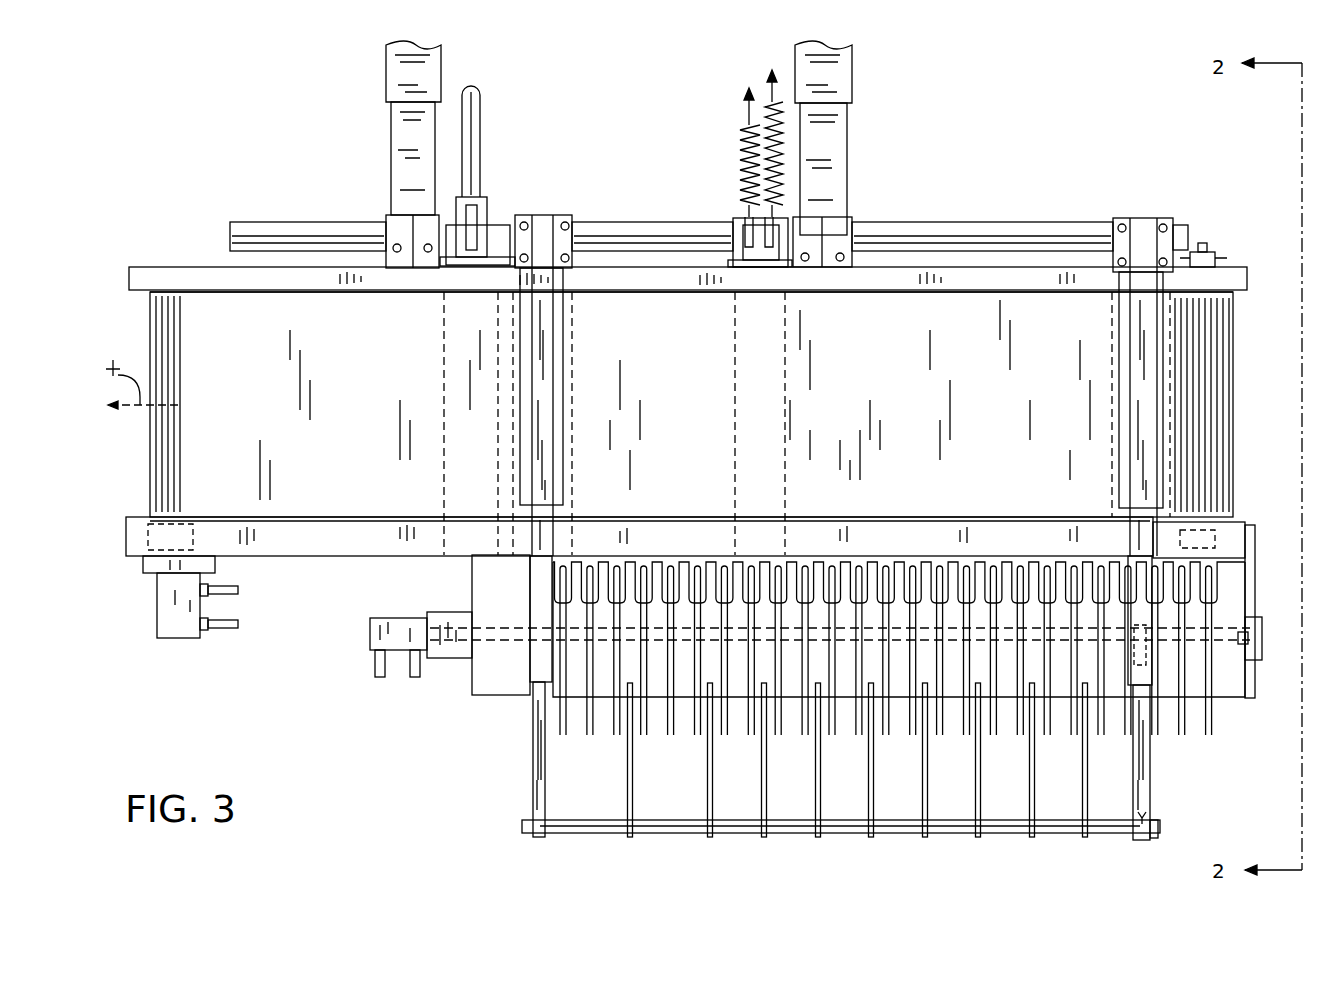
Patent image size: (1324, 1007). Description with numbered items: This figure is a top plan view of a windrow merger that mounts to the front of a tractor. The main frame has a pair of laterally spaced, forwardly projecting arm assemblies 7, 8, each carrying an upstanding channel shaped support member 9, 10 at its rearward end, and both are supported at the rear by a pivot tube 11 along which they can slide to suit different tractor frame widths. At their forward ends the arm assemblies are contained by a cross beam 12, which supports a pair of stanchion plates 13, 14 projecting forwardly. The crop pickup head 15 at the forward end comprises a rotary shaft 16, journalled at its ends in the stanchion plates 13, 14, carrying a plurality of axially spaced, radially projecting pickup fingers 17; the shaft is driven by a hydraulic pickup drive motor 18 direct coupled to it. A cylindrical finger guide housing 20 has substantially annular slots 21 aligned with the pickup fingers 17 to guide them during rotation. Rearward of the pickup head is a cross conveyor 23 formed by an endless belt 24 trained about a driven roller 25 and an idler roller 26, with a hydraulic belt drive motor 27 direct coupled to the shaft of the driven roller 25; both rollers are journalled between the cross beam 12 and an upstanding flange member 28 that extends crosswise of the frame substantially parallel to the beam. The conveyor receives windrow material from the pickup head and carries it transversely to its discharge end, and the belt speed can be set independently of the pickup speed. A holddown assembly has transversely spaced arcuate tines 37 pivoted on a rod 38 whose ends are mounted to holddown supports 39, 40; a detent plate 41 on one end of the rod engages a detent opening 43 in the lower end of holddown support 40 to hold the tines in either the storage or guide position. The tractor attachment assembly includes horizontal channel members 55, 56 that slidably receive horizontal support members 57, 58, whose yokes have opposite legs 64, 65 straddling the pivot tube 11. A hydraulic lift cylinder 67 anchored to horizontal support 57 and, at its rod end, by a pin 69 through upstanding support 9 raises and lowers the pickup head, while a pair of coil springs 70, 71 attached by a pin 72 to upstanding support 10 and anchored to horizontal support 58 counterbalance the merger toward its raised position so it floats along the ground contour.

The arm assembly 7 is at (442, 377).
The arm assembly 8 is at (787, 353).
The upstanding channel shaped support member 9 is at (487, 226).
The upstanding channel shaped support member 10 is at (733, 216).
The pivot tube 11 is at (305, 222).
The cross beam 12 is at (319, 544).
The stanchion plate 13 is at (497, 697).
The stanchion plate 14 is at (1255, 580).
The crop pickup head 15 is at (1228, 697).
The rotary shaft 16 is at (500, 630).
The pickup fingers 17 is at (885, 675).
The hydraulic pickup drive motor 18 is at (370, 637).
The finger guide housing 20 is at (918, 720).
The annular slots 21 is at (590, 692).
The cross conveyor 23 is at (238, 274).
The endless belt 24 is at (876, 420).
The driven roller 25 is at (160, 542).
The idler roller 26 is at (1218, 268).
The hydraulic belt drive motor 27 is at (160, 615).
The upstanding flange member 28 is at (1043, 291).
The tines 37 is at (627, 792).
The rod 38 is at (692, 834).
The holddown support 39 is at (533, 790).
The holddown support 40 is at (1152, 775).
The detent plate 41 is at (1155, 822).
The detent opening 43 is at (1135, 817).
The channel member 55 is at (386, 66).
The channel member 56 is at (852, 72).
The horizontal support member 57 is at (391, 152).
The horizontal support member 58 is at (847, 130).
The yoke leg 64 is at (412, 270).
The yoke leg 65 is at (835, 270).
The hydraulic lift cylinder 67 is at (482, 136).
The pin 69 is at (476, 258).
The coil spring 70 is at (785, 152).
The coil spring 71 is at (738, 125).
The pin 72 is at (763, 262).